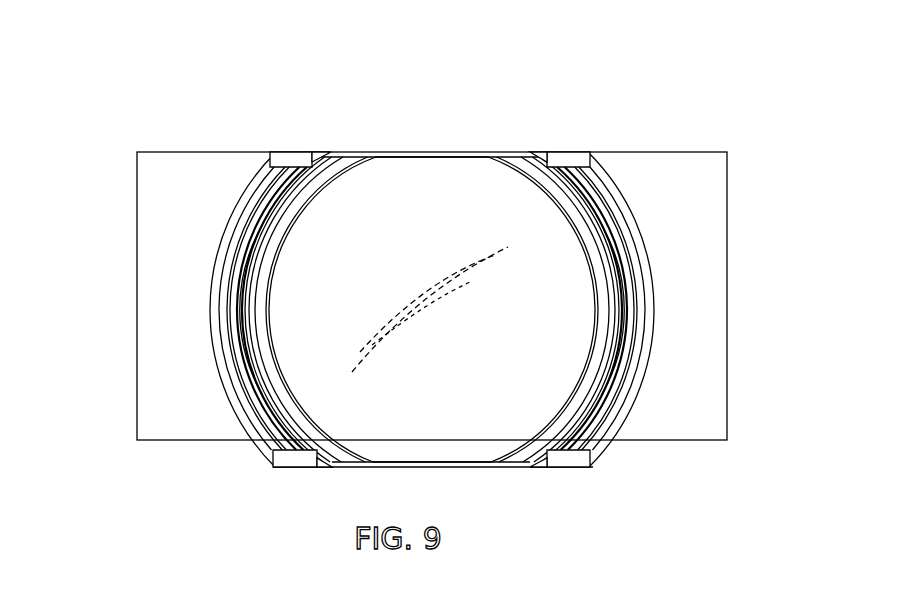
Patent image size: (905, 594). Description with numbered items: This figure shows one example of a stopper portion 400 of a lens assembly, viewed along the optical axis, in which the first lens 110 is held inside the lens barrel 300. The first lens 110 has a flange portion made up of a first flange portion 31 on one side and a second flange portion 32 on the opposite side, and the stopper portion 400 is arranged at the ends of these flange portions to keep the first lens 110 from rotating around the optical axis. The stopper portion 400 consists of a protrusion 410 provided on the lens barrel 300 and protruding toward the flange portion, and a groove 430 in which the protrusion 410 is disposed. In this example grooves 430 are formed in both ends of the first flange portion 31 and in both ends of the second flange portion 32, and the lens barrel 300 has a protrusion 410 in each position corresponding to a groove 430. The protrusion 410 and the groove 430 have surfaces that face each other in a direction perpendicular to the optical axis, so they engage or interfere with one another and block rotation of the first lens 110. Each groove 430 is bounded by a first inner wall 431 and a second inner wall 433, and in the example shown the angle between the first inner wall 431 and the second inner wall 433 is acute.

The first lens 110 is at (446, 214).
The lens barrel 300 is at (162, 373).
The stopper portion 400 is at (423, 235).
The protrusion 410 is at (297, 163).
The groove 430 is at (432, 256).
The first inner wall 431 is at (293, 167).
The second inner wall 433 is at (252, 84).
The first flange portion 31 is at (262, 277).
The second flange portion 32 is at (603, 278).